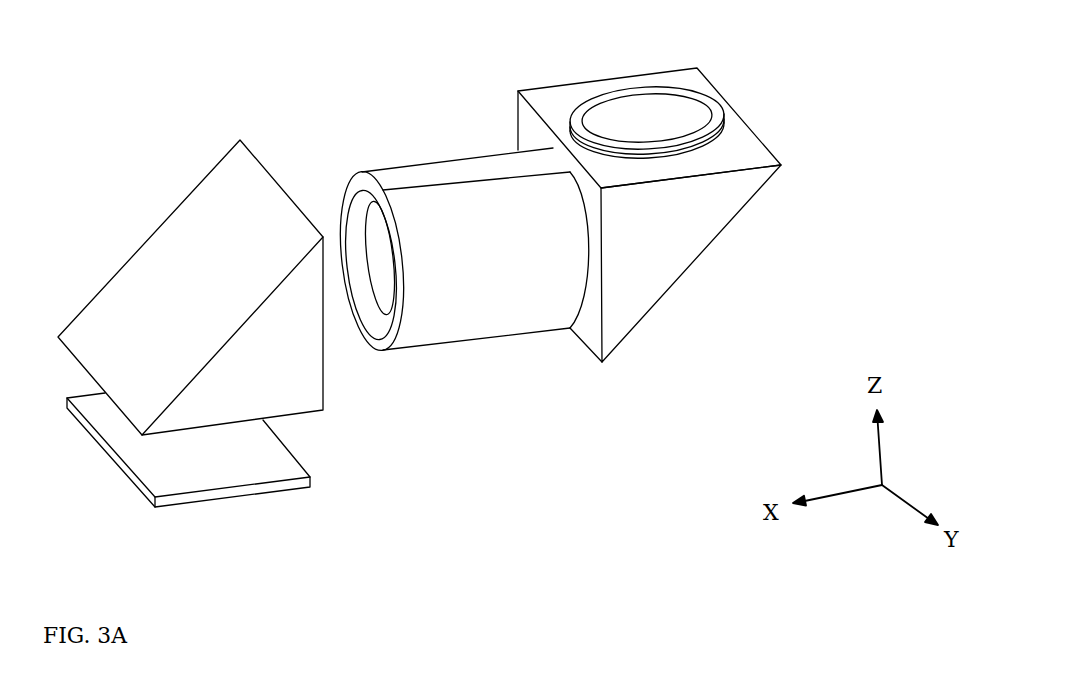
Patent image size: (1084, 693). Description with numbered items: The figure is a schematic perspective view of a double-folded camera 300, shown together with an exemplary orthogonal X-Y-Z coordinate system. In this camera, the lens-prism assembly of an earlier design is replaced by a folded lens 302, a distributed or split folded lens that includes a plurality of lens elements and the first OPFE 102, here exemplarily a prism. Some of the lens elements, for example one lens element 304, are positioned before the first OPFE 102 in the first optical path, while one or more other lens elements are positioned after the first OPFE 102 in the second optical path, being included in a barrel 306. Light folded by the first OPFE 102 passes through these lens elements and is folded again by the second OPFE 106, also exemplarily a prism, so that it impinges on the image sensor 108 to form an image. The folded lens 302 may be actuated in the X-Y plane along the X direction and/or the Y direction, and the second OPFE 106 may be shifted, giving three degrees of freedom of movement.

The double-folded camera 300 is at (375, 53).
The first OPFE 102 is at (673, 252).
The second OPFE 106 is at (123, 277).
The image sensor 108 is at (218, 487).
The folded lens 302 is at (790, 366).
The lens element 304 is at (640, 108).
The barrel 306 is at (453, 205).